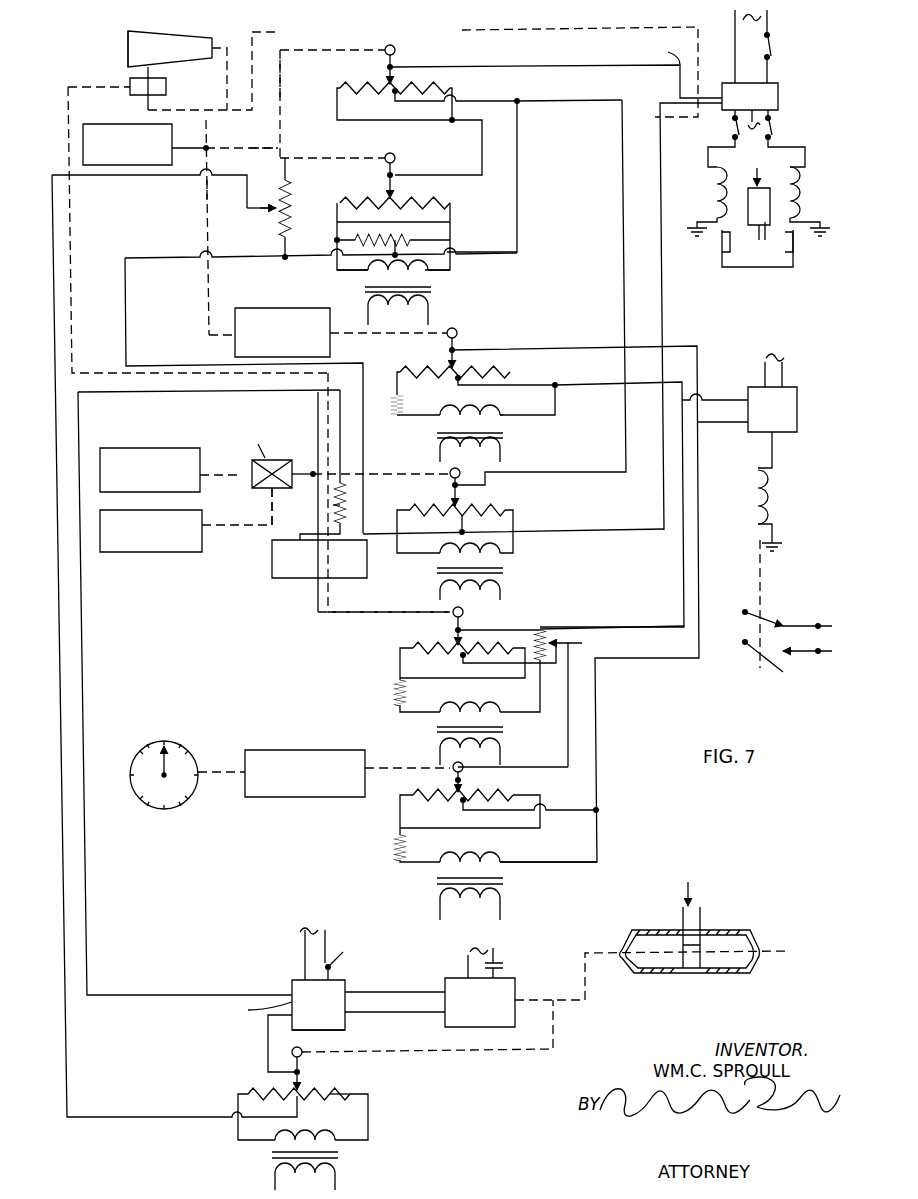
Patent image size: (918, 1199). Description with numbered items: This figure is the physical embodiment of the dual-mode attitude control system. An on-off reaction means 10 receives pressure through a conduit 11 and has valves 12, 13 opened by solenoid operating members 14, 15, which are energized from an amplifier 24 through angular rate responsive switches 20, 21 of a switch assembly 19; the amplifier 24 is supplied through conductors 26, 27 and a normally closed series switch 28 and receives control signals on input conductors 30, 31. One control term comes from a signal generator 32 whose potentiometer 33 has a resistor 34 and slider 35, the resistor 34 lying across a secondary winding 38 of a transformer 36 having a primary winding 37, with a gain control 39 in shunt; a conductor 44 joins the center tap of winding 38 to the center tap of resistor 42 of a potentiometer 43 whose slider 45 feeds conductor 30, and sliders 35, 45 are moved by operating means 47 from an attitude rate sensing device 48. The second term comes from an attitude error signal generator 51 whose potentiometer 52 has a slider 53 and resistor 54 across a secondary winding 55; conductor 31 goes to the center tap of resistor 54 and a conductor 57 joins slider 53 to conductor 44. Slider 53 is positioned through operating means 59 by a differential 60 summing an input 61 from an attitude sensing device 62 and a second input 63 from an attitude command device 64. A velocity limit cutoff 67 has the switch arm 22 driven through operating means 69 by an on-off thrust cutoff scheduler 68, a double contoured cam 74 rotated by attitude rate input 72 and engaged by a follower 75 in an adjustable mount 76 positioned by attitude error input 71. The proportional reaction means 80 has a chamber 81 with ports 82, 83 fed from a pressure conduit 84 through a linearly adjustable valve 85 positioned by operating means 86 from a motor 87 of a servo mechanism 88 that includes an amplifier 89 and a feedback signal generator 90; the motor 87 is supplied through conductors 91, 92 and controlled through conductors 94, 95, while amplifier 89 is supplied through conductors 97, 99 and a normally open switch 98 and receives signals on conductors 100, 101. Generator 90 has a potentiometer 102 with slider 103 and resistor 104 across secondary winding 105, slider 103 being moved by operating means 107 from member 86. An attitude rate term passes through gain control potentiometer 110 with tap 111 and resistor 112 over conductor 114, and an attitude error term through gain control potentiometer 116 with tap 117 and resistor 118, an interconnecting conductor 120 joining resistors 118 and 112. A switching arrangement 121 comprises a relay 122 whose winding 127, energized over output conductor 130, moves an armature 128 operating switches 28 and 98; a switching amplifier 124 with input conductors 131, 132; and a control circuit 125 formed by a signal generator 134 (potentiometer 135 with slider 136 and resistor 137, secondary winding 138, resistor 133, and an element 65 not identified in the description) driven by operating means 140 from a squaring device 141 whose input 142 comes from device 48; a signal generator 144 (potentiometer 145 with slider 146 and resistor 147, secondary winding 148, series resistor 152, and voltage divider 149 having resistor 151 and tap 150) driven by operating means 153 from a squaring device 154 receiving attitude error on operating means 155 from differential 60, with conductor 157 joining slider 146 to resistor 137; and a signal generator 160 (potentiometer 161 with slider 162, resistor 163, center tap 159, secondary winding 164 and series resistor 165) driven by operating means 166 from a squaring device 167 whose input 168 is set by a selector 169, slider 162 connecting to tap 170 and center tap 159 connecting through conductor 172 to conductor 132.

The on-off reaction means 10 is at (688, 233).
The conduit 11 is at (761, 243).
The valve 12 is at (795, 250).
The valve 13 is at (724, 248).
The solenoid operating member 14 is at (798, 199).
The solenoid operating member 15 is at (712, 200).
The switch assembly 19 is at (768, 133).
The angular rate responsive switch 20 is at (771, 128).
The angular rate responsive switch 21 is at (733, 128).
The switch arm 22 is at (753, 137).
The amplifier 24 is at (779, 104).
The conductor 26 is at (735, 32).
The conductor 27 is at (770, 22).
The series switch 28 is at (771, 47).
The input signal conductor 30 is at (451, 60).
The input signal conductor 31 is at (668, 104).
The signal generator 32 is at (460, 151).
The attitude rate potentiometer 33 is at (440, 196).
The resistor 34 is at (376, 198).
The adjustable slider 35 is at (396, 185).
The transformer 36 is at (440, 292).
The primary winding 37 is at (370, 306).
The secondary winding 38 is at (429, 274).
The ratio potentiometer 39 is at (388, 240).
The potentiometer resistor 42 is at (425, 87).
The potentiometer 43 is at (374, 70).
The conductor 44 is at (520, 208).
The adjustable slider 45 is at (396, 73).
The operating means 47 is at (250, 148).
The attitude rate sensing device 48 is at (121, 123).
The attitude error signal generator 51 is at (510, 553).
The attitude error potentiometer 52 is at (476, 504).
The adjustable slider 53 is at (448, 492).
The resistor 54 is at (500, 510).
The secondary winding 55 is at (438, 562).
The conductor 57 is at (622, 278).
The operating means 59 is at (416, 472).
The differential 60 is at (292, 488).
The input 61 is at (236, 472).
The attitude sensing device 62 is at (154, 448).
The second input 63 is at (271, 516).
The attitude command device 64 is at (142, 552).
The transformer primary winding 65 is at (495, 414).
The velocity limit cutoff 67 is at (552, 28).
The on-off thrust cutoff scheduler 68 is at (206, 64).
The operating means 69 is at (287, 33).
The input 71 is at (94, 84).
The input 72 is at (209, 122).
The cam 74 is at (128, 56).
The cam follower 75 is at (152, 72).
The axially adjustable mount 76 is at (160, 94).
The proportional reaction means 80 is at (702, 943).
The chamber 81 is at (662, 932).
The port 82 is at (628, 958).
The port 83 is at (758, 960).
The pressure conduit 84 is at (698, 930).
The linearly adjustable valve 85 is at (702, 946).
The operating means 86 is at (548, 1002).
The motor 87 is at (516, 996).
The proportional control servo mechanism 88 is at (412, 963).
The amplifier 89 is at (355, 1030).
The feedback signal generator 90 is at (352, 1121).
The conductor 91 is at (467, 968).
The conductor 92 is at (496, 958).
The conductor 94 is at (428, 990).
The conductor 95 is at (398, 1014).
The conductor 97 is at (304, 952).
The normally open switch 98 is at (343, 958).
The conductor 99 is at (334, 970).
The signal input conductor 100 is at (274, 992).
The signal input conductor 101 is at (286, 1043).
The potentiometer 102 is at (306, 1090).
The adjustable slider 103 is at (292, 1076).
The resistor 104 is at (340, 1094).
The secondary winding 105 is at (272, 1142).
The operating means 107 is at (382, 1056).
The gain control potentiometer 110 is at (224, 190).
The adjustable tap 111 is at (250, 210).
The resistor 112 is at (280, 238).
The conductor 114 is at (155, 178).
The gain control potentiometer 116 is at (346, 518).
The adjustable tap 117 is at (323, 484).
The resistor 118 is at (347, 490).
The interconnecting conductor 120 is at (144, 366).
The switching arrangement 121 is at (630, 587).
The relay 122 is at (803, 512).
The switching amplifier 124 is at (796, 414).
The amplifier control circuit 125 is at (735, 366).
The operable winding 127 is at (750, 504).
The armature 128 is at (758, 546).
The output conductor 130 is at (772, 455).
The input conductor 131 is at (735, 391).
The input conductor 132 is at (711, 418).
The resistor 133 is at (396, 412).
The signal generator 134 is at (520, 333).
The potentiometer 135 is at (440, 350).
The adjustable slider 136 is at (458, 347).
The resistor 137 is at (473, 364).
The secondary winding 138 is at (496, 420).
The operating means 140 is at (372, 336).
The squaring device 141 is at (276, 308).
The operating means 142 is at (207, 302).
The signal generator 144 is at (385, 668).
The potentiometer 145 is at (446, 632).
The adjustable slider 146 is at (463, 626).
The resistor 147 is at (452, 652).
The secondary winding 148 is at (481, 698).
The voltage divider 149 is at (588, 632).
The adjustable tap 150 is at (559, 705).
The resistor 151 is at (538, 634).
The series resistor 152 is at (396, 694).
The operating means 153 is at (363, 614).
The squaring device 154 is at (290, 580).
The operating means 155 is at (274, 520).
The conductor 157 is at (652, 624).
The center tap 159 is at (525, 815).
The signal generator 160 is at (385, 825).
The potentiometer 161 is at (450, 780).
The adjustable slider 162 is at (463, 773).
The resistor 163 is at (452, 800).
The secondary winding 164 is at (482, 862).
The series resistor 165 is at (396, 848).
The operating means 166 is at (390, 766).
The squaring device 167 is at (325, 750).
The input 168 is at (232, 780).
The selector 169 is at (190, 748).
The adjustable tap 170 is at (559, 764).
The conductor 172 is at (598, 770).